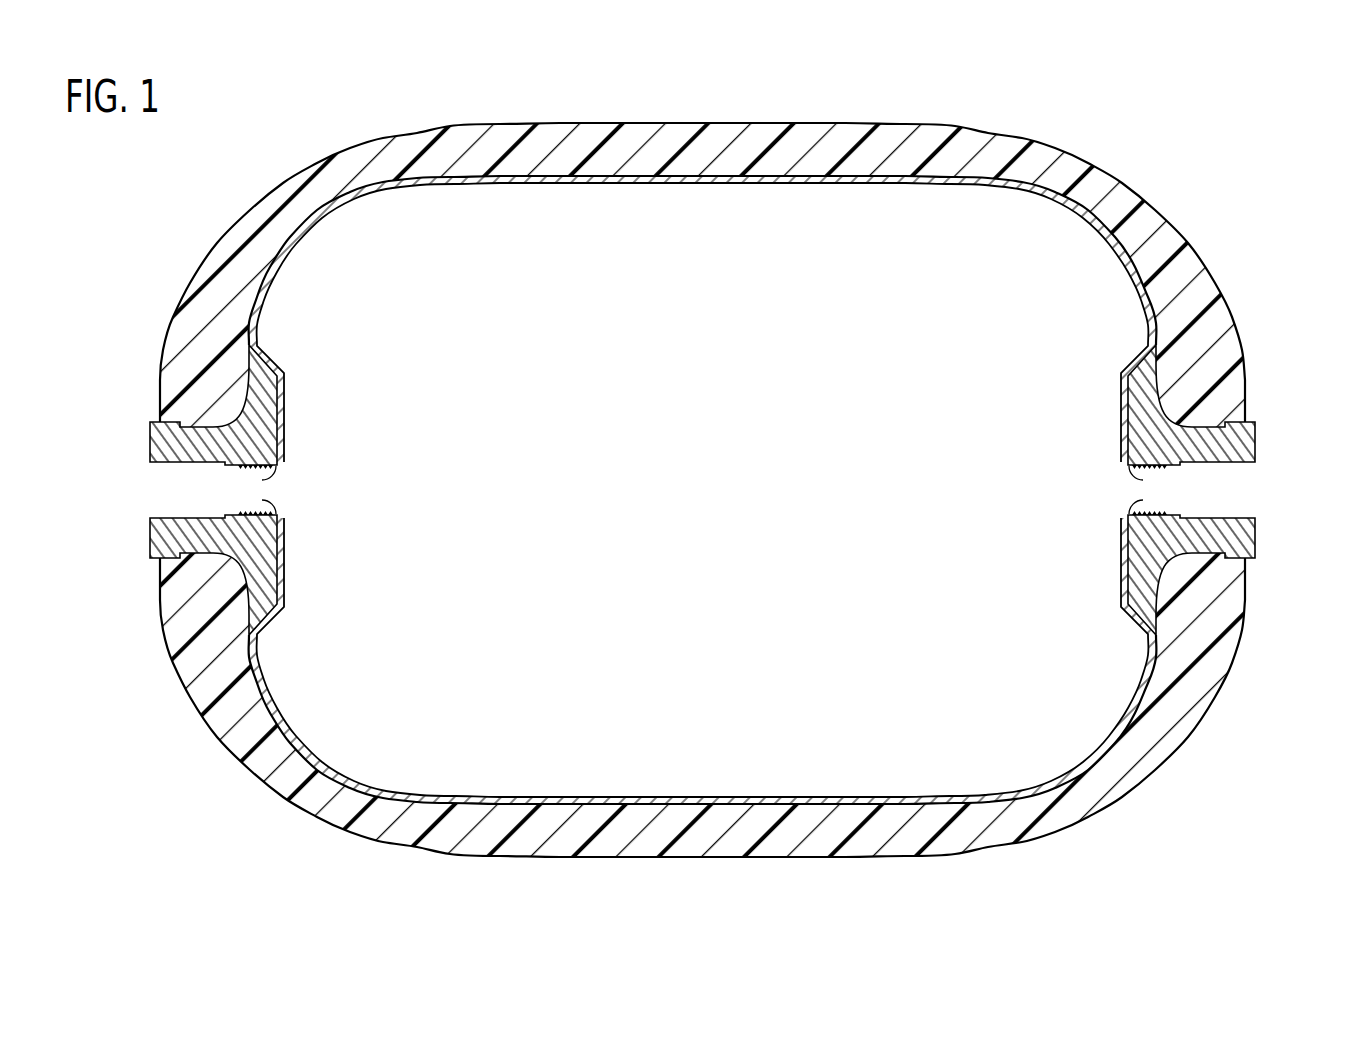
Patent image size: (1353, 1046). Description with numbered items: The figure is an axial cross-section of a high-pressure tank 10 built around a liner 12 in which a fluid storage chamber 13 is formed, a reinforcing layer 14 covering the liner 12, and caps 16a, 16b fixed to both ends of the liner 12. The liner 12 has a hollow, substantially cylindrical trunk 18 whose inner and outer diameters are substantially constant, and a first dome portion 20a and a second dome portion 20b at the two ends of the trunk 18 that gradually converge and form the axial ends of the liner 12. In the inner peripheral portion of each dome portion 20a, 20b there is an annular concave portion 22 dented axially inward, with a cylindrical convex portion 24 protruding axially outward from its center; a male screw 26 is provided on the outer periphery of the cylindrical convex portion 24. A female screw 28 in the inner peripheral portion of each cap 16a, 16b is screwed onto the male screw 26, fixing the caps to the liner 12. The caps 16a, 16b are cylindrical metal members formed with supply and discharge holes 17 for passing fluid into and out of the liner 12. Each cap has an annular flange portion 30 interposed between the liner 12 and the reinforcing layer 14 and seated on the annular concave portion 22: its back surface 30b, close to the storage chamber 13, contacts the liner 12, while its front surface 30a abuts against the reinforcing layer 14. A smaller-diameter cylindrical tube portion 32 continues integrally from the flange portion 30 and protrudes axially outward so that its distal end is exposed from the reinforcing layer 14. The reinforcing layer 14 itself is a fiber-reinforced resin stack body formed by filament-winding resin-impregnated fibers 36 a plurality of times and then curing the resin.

The high-pressure tank 10 is at (99, 176).
The liner 12 is at (461, 165).
The fluid storage chamber 13 is at (678, 200).
The reinforcing layer 14 is at (552, 119).
The cap 16a is at (140, 434).
The cap 16b is at (1265, 434).
The supply and discharge hole 17 is at (162, 477).
The trunk 18 is at (770, 175).
The first dome portion 20a is at (307, 220).
The second dome portion 20b is at (1098, 220).
The annular concave portion 22 is at (284, 577).
The cylindrical convex portion 24 is at (243, 516).
The male screw 26 is at (270, 540).
The female screw 28 is at (270, 477).
The flange portion 30 is at (270, 398).
The front surface 30a is at (243, 363).
The back surface 30b is at (284, 417).
The tube portion 32 is at (207, 435).
The impregnated fiber 36 is at (843, 140).